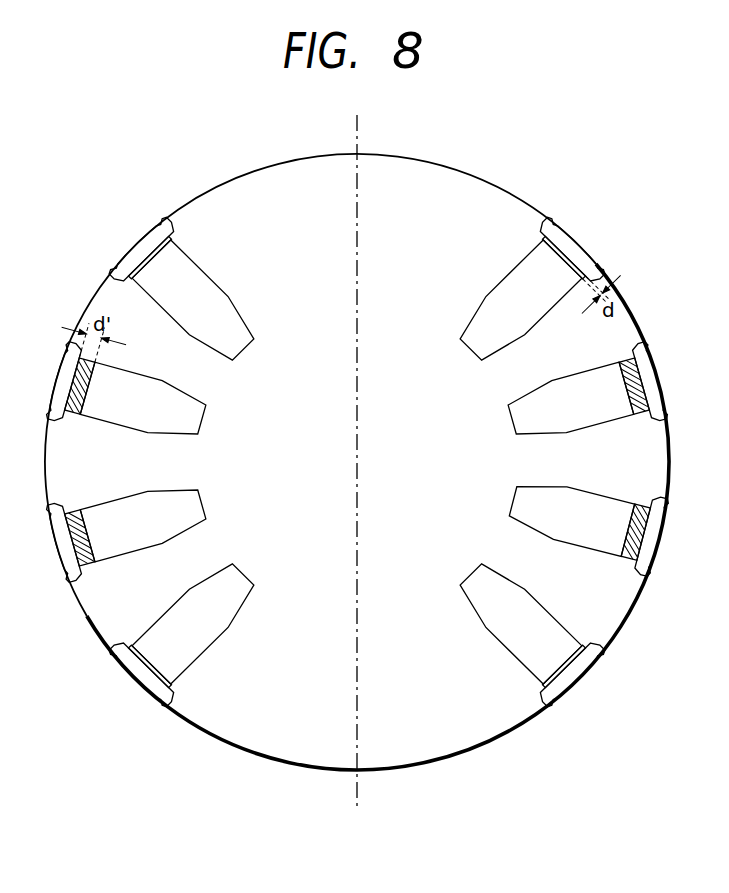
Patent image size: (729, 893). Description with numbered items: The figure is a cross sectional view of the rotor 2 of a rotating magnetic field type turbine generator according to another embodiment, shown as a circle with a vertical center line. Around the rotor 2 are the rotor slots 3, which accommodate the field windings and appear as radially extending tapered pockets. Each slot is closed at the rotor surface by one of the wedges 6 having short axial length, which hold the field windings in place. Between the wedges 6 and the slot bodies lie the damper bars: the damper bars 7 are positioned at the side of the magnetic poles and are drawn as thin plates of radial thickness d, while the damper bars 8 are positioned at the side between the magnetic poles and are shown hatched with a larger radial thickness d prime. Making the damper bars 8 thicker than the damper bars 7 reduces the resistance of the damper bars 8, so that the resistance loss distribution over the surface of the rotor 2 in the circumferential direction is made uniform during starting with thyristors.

The rotor 2 is at (461, 178).
The rotor slots 3 is at (467, 344).
The wedges having short axial length 6 is at (571, 241).
The damper bars positioned at the side of the magnetic poles 7 is at (538, 240).
The damper bars positioned at the side between the magnetic poles 8 is at (636, 509).